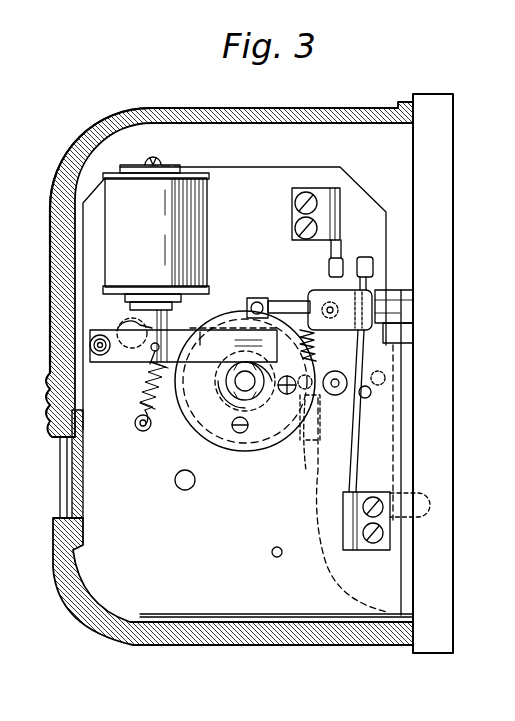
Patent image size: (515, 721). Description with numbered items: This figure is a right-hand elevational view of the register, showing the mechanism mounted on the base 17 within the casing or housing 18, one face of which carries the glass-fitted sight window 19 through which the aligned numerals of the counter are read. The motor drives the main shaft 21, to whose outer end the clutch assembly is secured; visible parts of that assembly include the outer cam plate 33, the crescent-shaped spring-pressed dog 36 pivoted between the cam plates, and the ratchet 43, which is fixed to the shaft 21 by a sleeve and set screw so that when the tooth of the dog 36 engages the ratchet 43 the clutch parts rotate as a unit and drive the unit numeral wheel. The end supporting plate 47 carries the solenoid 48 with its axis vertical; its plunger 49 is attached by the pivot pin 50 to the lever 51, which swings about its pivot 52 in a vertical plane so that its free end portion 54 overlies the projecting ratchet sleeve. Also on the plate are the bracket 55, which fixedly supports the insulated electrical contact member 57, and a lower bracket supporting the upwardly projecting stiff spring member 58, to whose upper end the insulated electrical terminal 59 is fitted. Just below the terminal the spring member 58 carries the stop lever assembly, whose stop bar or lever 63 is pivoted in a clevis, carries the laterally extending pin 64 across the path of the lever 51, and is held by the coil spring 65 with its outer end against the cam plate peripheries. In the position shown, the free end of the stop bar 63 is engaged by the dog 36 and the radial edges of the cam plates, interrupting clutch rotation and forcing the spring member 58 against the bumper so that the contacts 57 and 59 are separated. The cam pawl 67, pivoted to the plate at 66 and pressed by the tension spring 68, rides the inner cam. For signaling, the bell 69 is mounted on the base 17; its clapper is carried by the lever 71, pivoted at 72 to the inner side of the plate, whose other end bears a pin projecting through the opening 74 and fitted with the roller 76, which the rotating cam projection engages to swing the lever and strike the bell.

The base 17 is at (440, 144).
The casing or housing 18 is at (214, 108).
The sight window 19 is at (62, 472).
The main shaft 21 is at (240, 390).
The cam plate 33 is at (238, 451).
The dog 36 is at (214, 442).
The ratchet 43 is at (240, 384).
The end supporting plate 47 is at (246, 181).
The solenoid 48 is at (156, 225).
The plunger 49 is at (140, 306).
The pivot pin 50 is at (142, 366).
The lever 51 is at (126, 368).
The lever pivot 52 is at (100, 356).
The free end portion of lever 54 is at (200, 332).
The bracket 55 is at (320, 208).
The electrical contact member 57 is at (343, 262).
The spring member 58 is at (353, 433).
The electrical terminal 59 is at (362, 262).
The stop bar or lever 63 is at (298, 304).
The pin 64 is at (257, 298).
The coil spring 65 is at (400, 312).
The pawl pivot 66 is at (122, 326).
The cam pawl 67 is at (200, 340).
The tension spring 68 is at (140, 431).
The bell 69 is at (333, 573).
The bell clapper actuating lever 71 is at (338, 372).
The lever pivot 72 is at (349, 411).
The opening 74 is at (314, 408).
The roller 76 is at (300, 434).